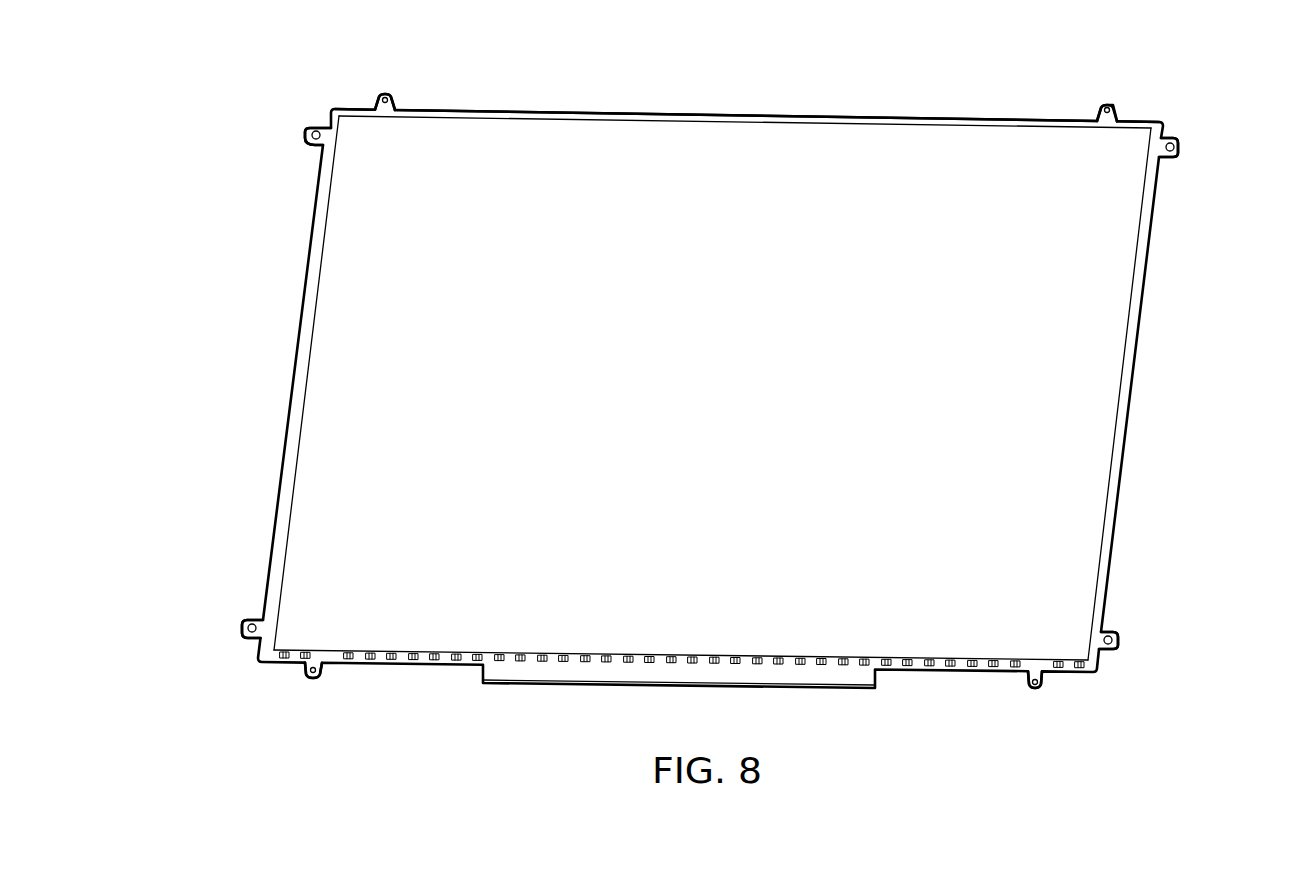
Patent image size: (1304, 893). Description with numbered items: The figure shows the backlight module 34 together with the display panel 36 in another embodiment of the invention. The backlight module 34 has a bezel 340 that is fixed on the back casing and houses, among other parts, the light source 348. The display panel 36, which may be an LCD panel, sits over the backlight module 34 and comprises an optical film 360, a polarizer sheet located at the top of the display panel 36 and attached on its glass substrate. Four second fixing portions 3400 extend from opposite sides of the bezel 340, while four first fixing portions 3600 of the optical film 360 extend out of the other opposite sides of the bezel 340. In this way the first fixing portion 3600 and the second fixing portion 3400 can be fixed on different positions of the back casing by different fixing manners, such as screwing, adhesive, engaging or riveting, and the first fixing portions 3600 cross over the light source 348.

The backlight module 34 is at (1150, 324).
The bezel 340 is at (1154, 237).
The light source 348 is at (414, 662).
The second fixing portion 3400 is at (311, 127).
The display panel 36 is at (947, 104).
The optical film 360 is at (636, 148).
The first fixing portion 3600 is at (385, 93).